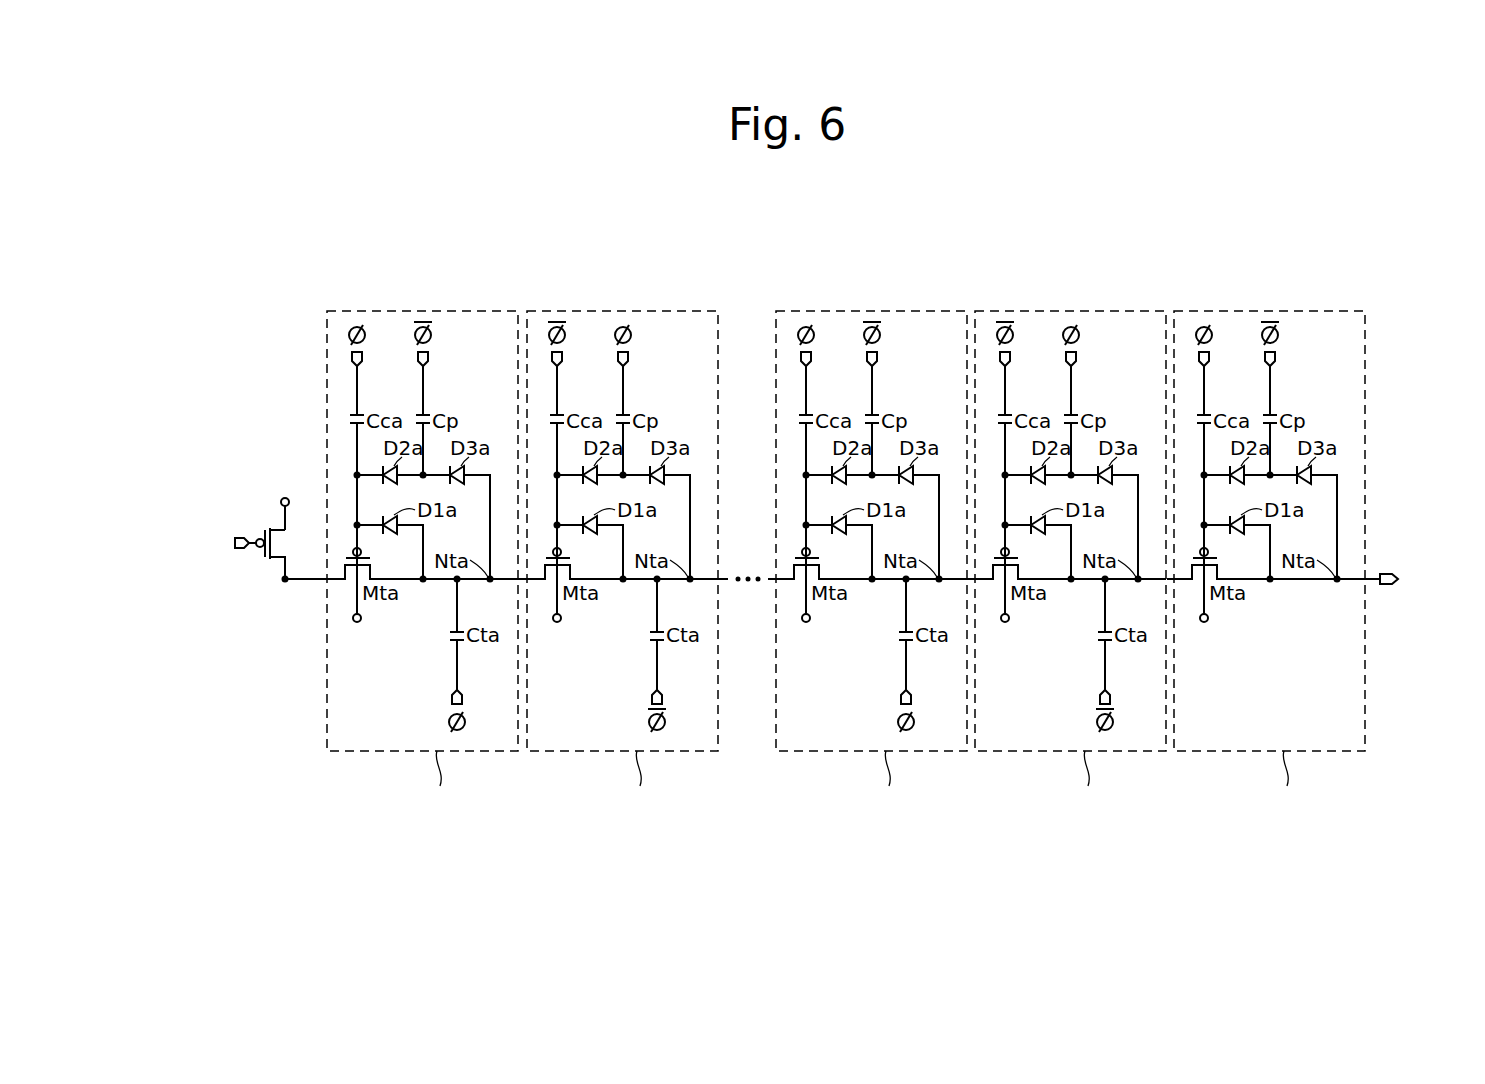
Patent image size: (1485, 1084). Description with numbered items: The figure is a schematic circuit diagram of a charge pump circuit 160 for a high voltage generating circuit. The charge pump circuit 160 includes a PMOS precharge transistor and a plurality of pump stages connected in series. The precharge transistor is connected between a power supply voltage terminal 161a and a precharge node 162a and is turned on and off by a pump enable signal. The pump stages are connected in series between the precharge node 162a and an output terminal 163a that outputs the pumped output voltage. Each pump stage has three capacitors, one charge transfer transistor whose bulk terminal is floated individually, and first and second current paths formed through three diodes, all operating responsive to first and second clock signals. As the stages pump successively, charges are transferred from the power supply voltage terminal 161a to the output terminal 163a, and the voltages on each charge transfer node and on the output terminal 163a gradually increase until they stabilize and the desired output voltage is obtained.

The charge pump circuit 160 is at (1321, 245).
The power supply voltage terminal 161a is at (281, 500).
The precharge node 162a is at (283, 581).
The output terminal 163a is at (1388, 586).